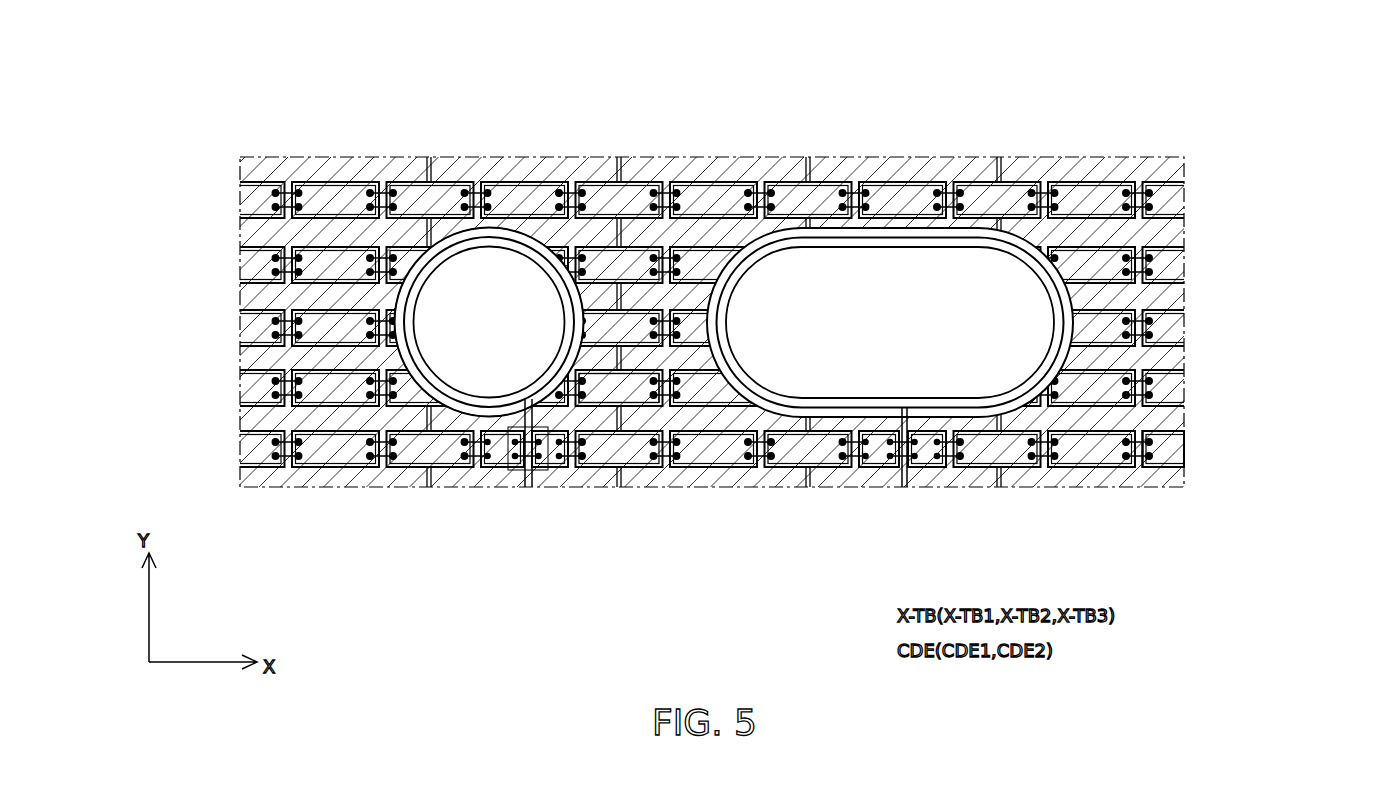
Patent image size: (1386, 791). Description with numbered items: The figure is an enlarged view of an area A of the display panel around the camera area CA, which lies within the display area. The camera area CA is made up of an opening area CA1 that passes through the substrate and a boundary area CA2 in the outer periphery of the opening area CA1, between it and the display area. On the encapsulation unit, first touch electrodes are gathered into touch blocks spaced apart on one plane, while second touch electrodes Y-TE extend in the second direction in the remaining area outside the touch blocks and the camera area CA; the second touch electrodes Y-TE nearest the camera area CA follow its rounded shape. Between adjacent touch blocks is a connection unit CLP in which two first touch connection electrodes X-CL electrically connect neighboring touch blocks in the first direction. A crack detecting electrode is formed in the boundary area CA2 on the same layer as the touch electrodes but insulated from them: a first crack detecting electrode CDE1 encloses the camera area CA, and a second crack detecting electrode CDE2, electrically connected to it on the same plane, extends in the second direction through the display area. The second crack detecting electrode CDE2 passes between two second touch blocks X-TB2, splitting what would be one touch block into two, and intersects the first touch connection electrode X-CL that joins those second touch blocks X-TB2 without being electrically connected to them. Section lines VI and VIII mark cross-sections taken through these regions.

The area A is at (1135, 83).
The second touch electrode Y-TE is at (383, 167).
The second touch block X-TB2 is at (497, 460).
The first touch connection electrode X-CL is at (648, 380).
The first crack detecting electrode CDE1 is at (733, 252).
The second crack detecting electrode CDE2 is at (907, 410).
The camera area CA is at (170, 291).
The opening area CA1 is at (414, 359).
The boundary area CA2 is at (383, 297).
The connection unit CLP is at (1140, 429).
The section line VI-VI' VI is at (595, 442).
The section line VIII-VIII' VIII is at (738, 442).